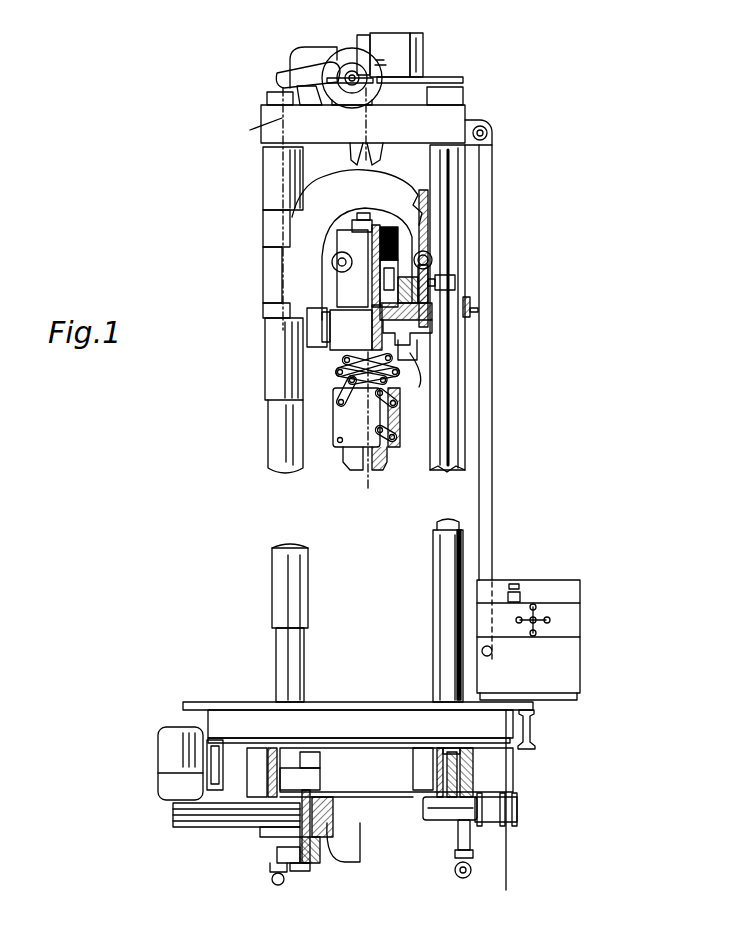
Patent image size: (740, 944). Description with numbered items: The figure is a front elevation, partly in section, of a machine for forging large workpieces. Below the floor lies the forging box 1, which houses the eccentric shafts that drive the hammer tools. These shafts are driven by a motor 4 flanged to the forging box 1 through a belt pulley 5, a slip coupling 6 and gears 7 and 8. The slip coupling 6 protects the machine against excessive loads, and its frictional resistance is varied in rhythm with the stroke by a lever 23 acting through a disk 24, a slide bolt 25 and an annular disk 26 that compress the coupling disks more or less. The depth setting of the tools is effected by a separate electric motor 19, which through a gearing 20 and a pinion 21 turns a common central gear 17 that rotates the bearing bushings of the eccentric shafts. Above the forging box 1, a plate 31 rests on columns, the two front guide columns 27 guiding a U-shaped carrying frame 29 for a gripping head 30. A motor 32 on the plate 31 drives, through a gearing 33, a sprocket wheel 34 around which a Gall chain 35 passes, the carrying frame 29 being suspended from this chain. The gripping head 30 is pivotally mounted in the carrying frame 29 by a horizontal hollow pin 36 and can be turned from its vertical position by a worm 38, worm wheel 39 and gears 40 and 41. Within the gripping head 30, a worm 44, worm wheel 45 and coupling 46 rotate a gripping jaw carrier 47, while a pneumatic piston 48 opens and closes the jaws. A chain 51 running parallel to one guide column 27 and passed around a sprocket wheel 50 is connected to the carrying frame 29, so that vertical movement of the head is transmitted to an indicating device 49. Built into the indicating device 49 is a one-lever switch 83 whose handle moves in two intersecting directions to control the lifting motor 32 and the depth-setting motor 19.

The forging box 1 is at (380, 782).
The motor 4 is at (165, 757).
The belt pulley 5 is at (268, 836).
The slip coupling 6 is at (334, 808).
The gear 7 is at (254, 750).
The gear 8 is at (320, 777).
The central gear 17 is at (427, 757).
The electric motor 19 is at (505, 803).
The gearing 20 is at (443, 822).
The pinion 21 is at (450, 756).
The lever 23 is at (298, 872).
The disk 24 is at (310, 866).
The slide bolt 25 is at (330, 834).
The annular disk 26 is at (320, 826).
The guide column 27 is at (446, 545).
The carrying frame 29 is at (284, 262).
The gripping head 30 is at (358, 341).
The plate 31 is at (399, 136).
The motor 32 is at (404, 47).
The gearing 33 is at (320, 52).
The sprocket wheel 34 is at (347, 104).
The Gall chain 35 is at (253, 118).
The hollow pin 36 is at (415, 333).
The worm 38 is at (430, 262).
The worm wheel 39 is at (432, 305).
The gear 40 is at (455, 281).
The gear 41 is at (406, 356).
The worm 44 is at (332, 264).
The worm wheel 45 is at (392, 255).
The coupling 46 is at (337, 240).
The gripping jaw carrier 47 is at (376, 270).
The piston 48 is at (335, 312).
The indicating device 49 is at (534, 584).
The sprocket wheel 50 is at (493, 658).
The chain 51 is at (481, 556).
The one-lever switch 83 is at (548, 617).